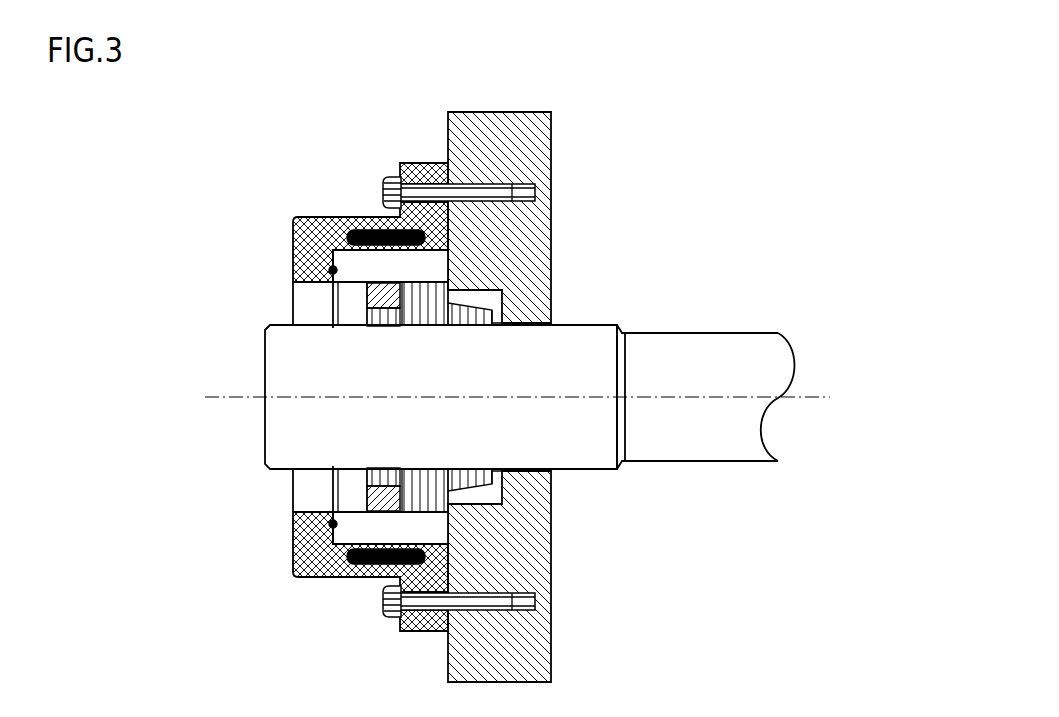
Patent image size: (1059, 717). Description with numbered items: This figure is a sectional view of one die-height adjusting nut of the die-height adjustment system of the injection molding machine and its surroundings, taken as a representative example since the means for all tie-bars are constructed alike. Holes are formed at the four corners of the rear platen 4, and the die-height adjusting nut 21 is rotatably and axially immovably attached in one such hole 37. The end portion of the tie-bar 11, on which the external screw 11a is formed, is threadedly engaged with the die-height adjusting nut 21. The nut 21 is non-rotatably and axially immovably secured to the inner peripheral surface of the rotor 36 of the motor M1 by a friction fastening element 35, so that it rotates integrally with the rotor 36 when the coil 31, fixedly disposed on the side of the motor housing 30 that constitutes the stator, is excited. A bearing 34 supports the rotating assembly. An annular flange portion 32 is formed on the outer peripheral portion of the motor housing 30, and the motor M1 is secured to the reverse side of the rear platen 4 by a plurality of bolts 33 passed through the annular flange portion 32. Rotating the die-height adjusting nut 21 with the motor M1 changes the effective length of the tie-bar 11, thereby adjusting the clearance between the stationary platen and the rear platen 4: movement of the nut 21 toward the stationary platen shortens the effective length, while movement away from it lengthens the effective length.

The rear platen 4 is at (497, 112).
The tie-bar 11 is at (697, 333).
The external screw 11a is at (588, 470).
The die-height adjusting nut 21 is at (449, 282).
The motor housing 30 is at (302, 216).
The coil 31 is at (348, 266).
The annular flange portion 32 is at (423, 164).
The bolt 33 is at (384, 191).
The bearing 34 is at (292, 264).
The friction fastening element 35 is at (368, 286).
The rotor 36 is at (292, 240).
The hole 37 is at (527, 328).
The motor M1 is at (171, 176).